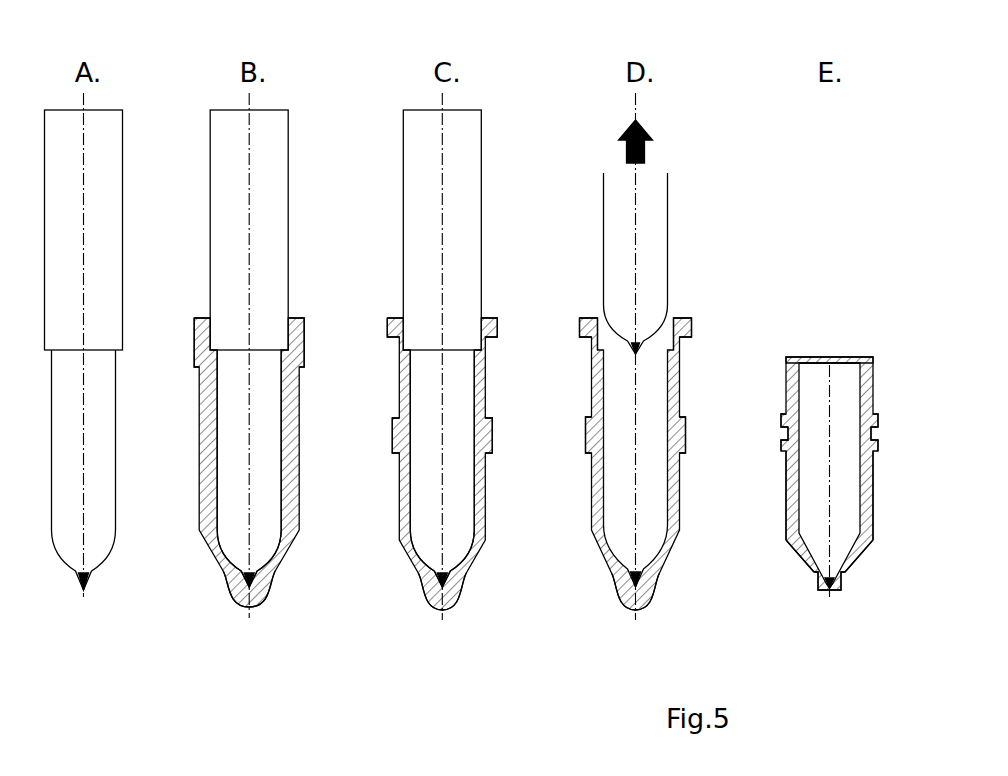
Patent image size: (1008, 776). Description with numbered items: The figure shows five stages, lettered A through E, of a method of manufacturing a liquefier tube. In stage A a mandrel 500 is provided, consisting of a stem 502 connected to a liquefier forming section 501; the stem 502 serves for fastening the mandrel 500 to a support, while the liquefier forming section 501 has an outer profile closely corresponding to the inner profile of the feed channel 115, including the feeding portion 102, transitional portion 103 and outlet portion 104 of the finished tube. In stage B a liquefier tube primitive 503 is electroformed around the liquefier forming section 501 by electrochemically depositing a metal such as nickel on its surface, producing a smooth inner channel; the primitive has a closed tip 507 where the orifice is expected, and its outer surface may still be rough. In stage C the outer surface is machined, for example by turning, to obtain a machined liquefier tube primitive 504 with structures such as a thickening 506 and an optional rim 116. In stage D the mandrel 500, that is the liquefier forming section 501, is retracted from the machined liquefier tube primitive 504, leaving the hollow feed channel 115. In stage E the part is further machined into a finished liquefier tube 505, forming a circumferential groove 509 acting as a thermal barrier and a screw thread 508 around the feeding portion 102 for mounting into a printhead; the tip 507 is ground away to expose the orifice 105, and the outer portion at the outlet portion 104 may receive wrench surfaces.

The mandrel 500 is at (128, 97).
The liquefier forming section 501 is at (97, 463).
The stem 502 is at (110, 215).
The liquefier tube primitive 503 is at (287, 558).
The machined liquefier tube primitive 504 is at (486, 557).
The finished liquefier tube 505 is at (798, 563).
The thickening 506 is at (492, 432).
The tip 507 is at (233, 600).
The screw thread 508 is at (785, 368).
The circumferential groove 509 is at (789, 432).
The rim 116 is at (292, 317).
The feed channel 115 is at (829, 355).
The feeding portion 102 is at (784, 382).
The transitional portion 103 is at (785, 501).
The outlet portion 104 is at (810, 587).
The orifice 105 is at (830, 588).